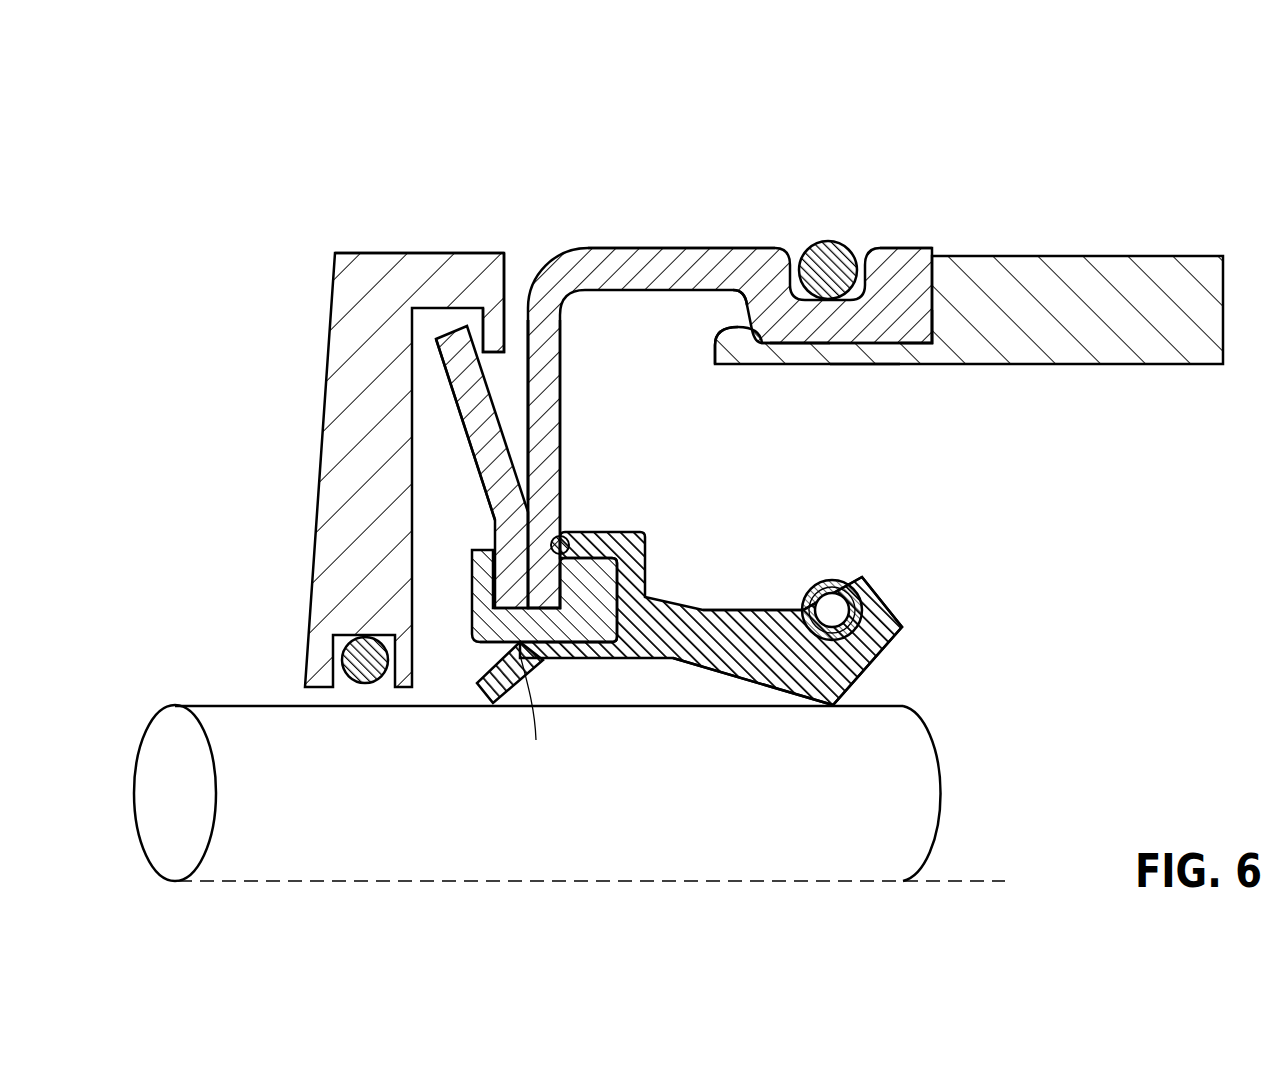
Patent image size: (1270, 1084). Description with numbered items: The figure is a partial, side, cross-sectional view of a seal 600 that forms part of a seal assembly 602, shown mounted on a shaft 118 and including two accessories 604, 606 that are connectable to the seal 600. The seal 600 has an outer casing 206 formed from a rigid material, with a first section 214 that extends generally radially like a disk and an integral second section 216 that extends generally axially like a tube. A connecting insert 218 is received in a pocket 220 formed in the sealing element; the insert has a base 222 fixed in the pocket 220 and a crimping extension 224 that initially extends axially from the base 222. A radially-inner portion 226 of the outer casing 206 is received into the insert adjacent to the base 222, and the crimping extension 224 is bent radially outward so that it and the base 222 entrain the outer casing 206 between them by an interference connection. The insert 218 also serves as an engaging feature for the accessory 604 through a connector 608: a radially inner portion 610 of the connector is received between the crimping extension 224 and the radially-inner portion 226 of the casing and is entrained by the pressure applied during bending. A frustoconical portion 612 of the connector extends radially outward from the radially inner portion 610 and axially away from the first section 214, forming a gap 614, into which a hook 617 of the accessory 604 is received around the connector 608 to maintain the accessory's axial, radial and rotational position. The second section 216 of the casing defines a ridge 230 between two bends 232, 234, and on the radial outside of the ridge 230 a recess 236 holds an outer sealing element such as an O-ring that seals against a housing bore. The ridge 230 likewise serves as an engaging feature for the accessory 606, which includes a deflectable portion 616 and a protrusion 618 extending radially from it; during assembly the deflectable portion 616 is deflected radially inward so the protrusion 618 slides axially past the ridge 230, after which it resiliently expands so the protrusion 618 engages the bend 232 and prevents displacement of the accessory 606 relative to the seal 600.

The shaft 118 is at (833, 708).
The seal 600 is at (916, 150).
The seal assembly 602 is at (434, 186).
The accessory 604 is at (372, 258).
The accessory 606 is at (1118, 262).
The connector 608 is at (475, 452).
The radially inner portion 610 is at (540, 640).
The frustoconical portion 612 is at (458, 385).
The gap 614 is at (508, 383).
The deflectable portion 616 is at (862, 368).
The hook 617 is at (500, 318).
The protrusion 618 is at (735, 330).
The outer casing 206 is at (630, 258).
The first section 214 is at (548, 410).
The second section 216 is at (690, 258).
The connecting insert 218 is at (495, 633).
The pocket 220 is at (590, 580).
The base 222 is at (645, 600).
The crimping extension 224 is at (472, 585).
The radially-inner portion 226 is at (562, 538).
The ridge 230 is at (835, 350).
The bend 232 is at (768, 352).
The bend 234 is at (918, 352).
The recess 236 is at (872, 237).